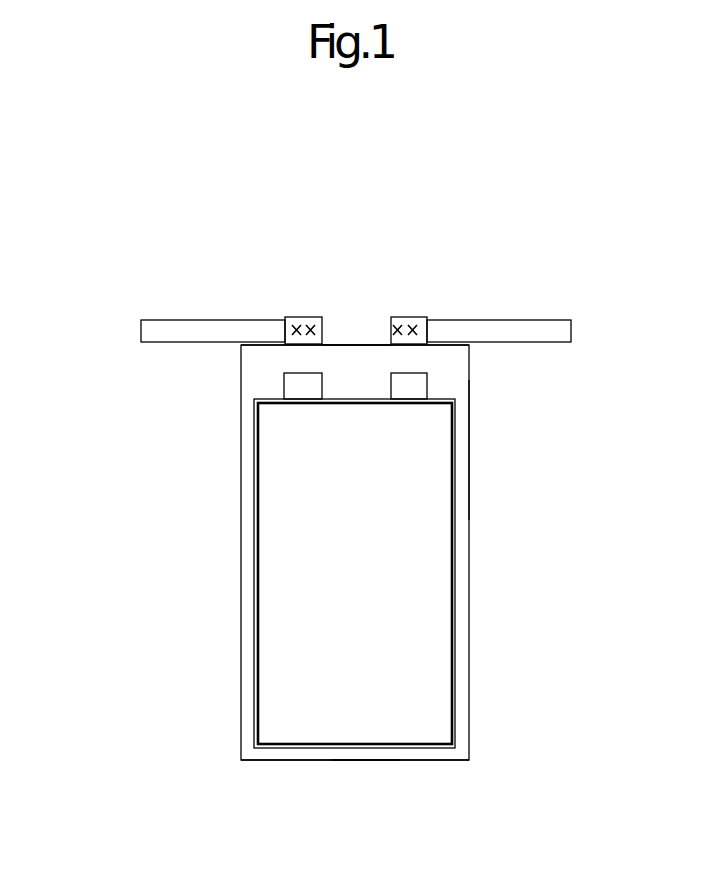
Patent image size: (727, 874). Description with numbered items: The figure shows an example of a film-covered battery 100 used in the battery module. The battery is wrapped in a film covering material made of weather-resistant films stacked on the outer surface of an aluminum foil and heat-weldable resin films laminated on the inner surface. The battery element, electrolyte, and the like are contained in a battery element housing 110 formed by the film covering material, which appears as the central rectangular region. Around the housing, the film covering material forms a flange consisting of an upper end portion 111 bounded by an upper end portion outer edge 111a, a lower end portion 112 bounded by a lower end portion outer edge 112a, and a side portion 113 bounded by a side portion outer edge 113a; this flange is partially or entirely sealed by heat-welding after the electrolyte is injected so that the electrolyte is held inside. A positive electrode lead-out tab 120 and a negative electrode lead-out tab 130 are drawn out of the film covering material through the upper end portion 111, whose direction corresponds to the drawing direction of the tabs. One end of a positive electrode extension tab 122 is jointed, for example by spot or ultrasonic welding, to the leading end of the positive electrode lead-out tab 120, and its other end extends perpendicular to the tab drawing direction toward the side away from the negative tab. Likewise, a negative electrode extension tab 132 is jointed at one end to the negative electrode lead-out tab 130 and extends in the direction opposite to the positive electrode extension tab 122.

The film-covered battery 100 is at (108, 228).
The battery element housing 110 is at (320, 560).
The upper end portion 111 is at (452, 381).
The upper end portion outer edge 111a is at (347, 343).
The lower end portion 112 is at (432, 750).
The lower end portion outer edge 112a is at (365, 760).
The side portion 113 is at (460, 542).
The side portion outer edge 113a is at (469, 448).
The positive electrode lead-out tab 120 is at (288, 330).
The positive electrode extension tab 122 is at (180, 316).
The negative electrode lead-out tab 130 is at (420, 318).
The negative electrode extension tab 132 is at (510, 328).